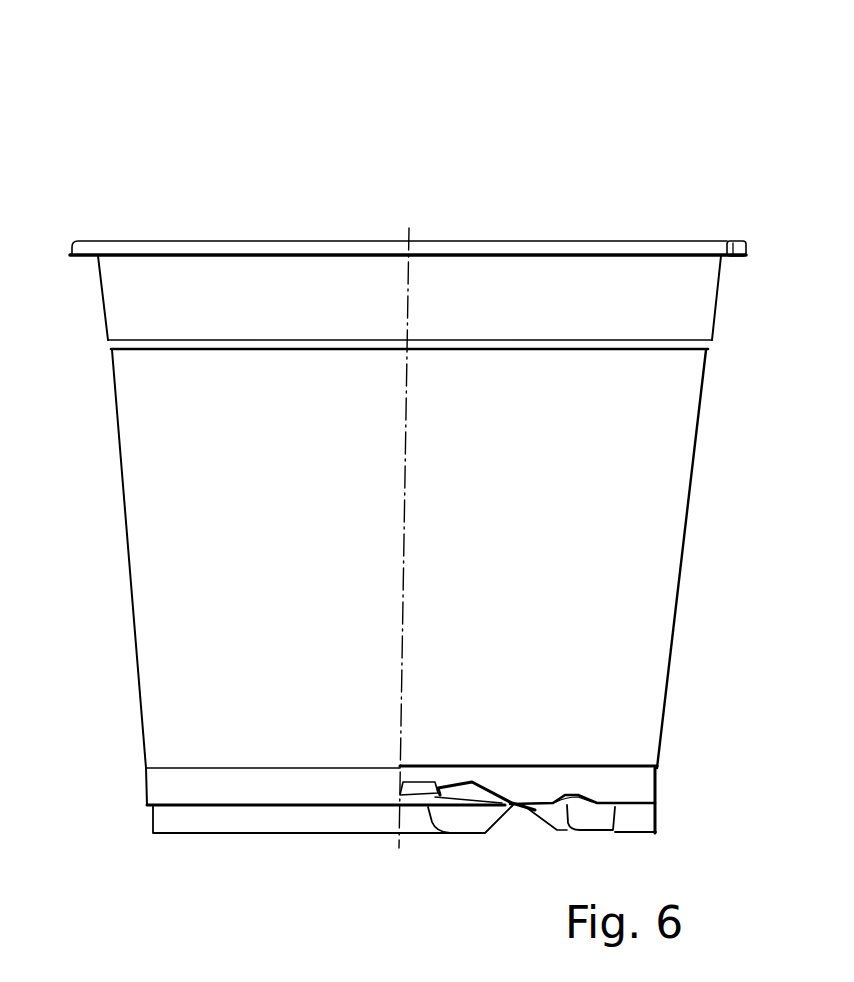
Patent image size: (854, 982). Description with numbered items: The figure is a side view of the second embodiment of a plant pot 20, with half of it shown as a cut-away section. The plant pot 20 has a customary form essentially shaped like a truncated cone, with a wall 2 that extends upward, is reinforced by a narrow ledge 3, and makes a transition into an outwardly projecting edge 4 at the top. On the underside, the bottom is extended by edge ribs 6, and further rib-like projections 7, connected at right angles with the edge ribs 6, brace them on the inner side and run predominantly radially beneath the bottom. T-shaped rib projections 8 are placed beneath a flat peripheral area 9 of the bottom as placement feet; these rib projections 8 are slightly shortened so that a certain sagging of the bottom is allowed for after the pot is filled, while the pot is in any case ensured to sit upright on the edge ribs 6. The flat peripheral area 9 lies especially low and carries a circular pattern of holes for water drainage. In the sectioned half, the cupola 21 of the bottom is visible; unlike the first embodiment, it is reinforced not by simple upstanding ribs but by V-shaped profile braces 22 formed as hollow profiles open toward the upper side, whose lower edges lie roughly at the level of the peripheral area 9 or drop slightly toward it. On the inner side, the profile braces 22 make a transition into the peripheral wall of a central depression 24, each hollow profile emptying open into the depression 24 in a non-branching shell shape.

The plant pot 20 is at (586, 76).
The container wall 2 is at (334, 461).
The narrow ledge 3 is at (112, 350).
The rim flange 4 is at (226, 242).
The edge ribs 6 is at (283, 826).
The rib-like projections 7 is at (592, 814).
The rib projections 8 is at (478, 818).
The flat peripheral area 9 is at (628, 795).
The cupola 21 is at (500, 774).
The profile braces 22 is at (453, 790).
The depression 24 is at (420, 778).